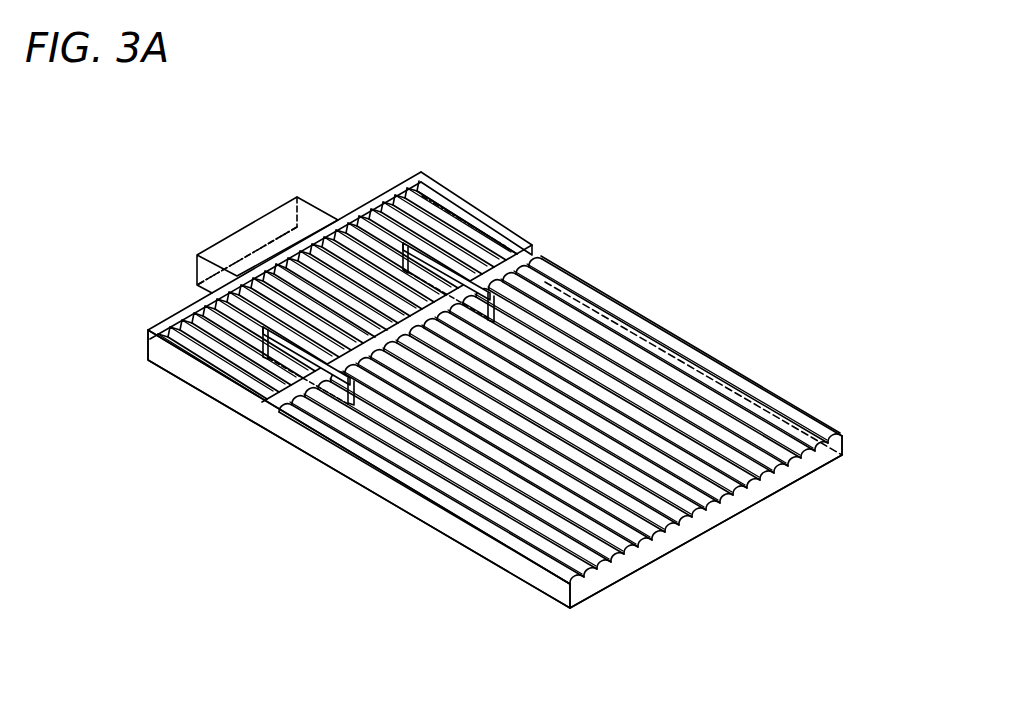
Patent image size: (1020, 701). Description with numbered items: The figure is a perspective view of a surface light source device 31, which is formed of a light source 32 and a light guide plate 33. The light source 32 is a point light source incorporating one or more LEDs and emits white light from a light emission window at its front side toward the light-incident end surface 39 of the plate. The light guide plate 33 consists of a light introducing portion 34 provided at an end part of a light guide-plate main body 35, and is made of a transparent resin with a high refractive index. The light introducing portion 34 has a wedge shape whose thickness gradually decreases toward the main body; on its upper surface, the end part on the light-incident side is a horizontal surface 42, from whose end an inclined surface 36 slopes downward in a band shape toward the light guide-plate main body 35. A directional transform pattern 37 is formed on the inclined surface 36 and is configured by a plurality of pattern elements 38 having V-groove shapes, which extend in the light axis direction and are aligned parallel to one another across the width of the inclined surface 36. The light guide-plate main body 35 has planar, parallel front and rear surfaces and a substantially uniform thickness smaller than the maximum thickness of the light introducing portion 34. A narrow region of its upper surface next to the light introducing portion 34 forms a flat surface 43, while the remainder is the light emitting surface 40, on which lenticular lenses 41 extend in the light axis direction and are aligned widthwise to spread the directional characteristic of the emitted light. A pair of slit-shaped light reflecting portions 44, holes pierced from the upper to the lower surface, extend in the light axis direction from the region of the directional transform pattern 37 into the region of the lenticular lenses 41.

The surface light source device 31 is at (633, 161).
The light source 32 is at (253, 235).
The light guide plate 33 is at (623, 304).
The light introducing portion 34 is at (198, 380).
The light guide-plate main body 35 is at (392, 493).
The inclined surface 36 is at (475, 212).
The directional transform pattern 37 is at (432, 248).
The pattern elements 38 is at (390, 258).
The light-incident end surface 39 is at (287, 248).
The light emitting surface 40 is at (622, 405).
The lenticular lenses 41 is at (640, 440).
The horizontal surface 42 is at (197, 307).
The flat surface 43 is at (287, 397).
The light reflecting portions 44 is at (493, 246).